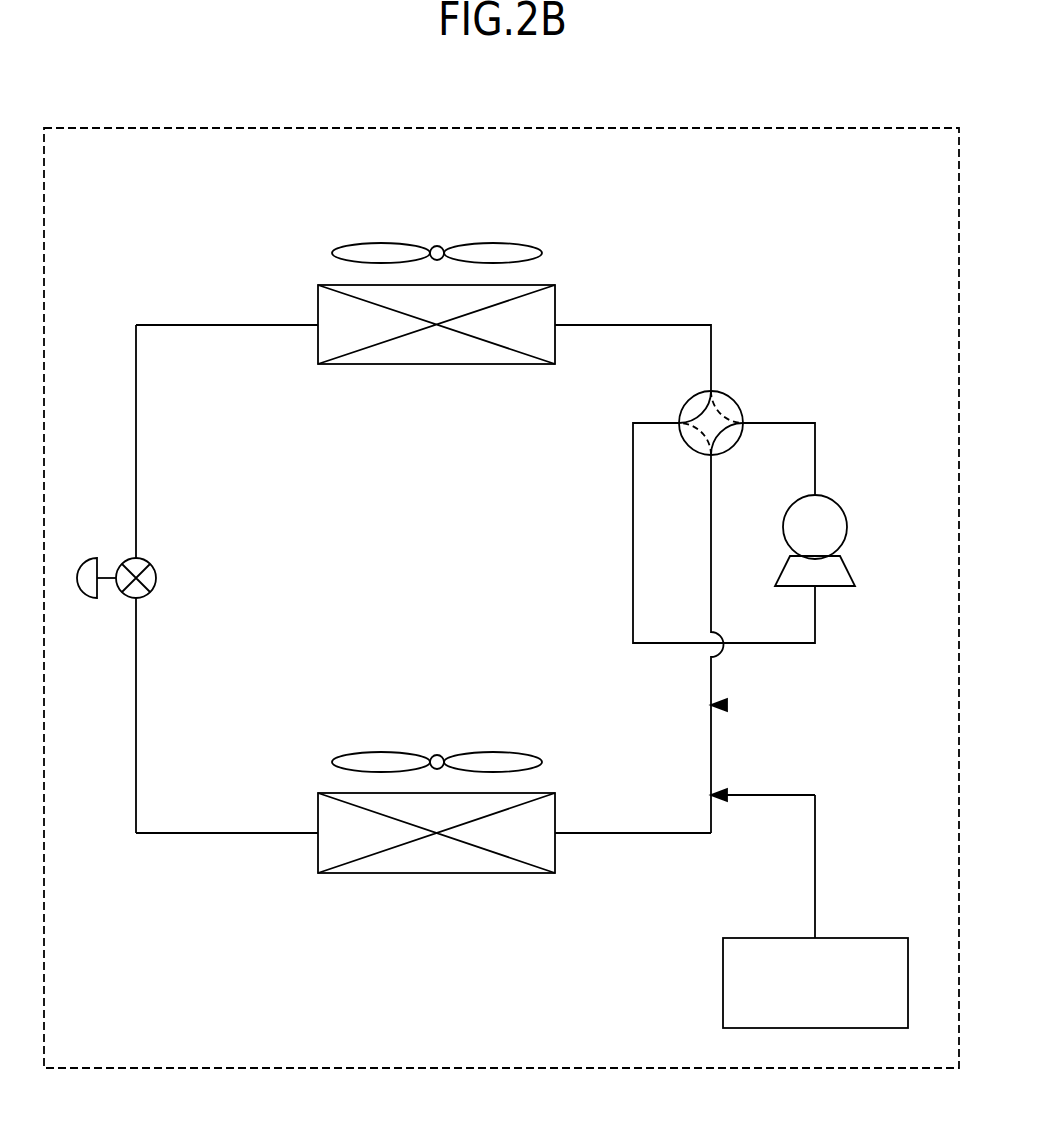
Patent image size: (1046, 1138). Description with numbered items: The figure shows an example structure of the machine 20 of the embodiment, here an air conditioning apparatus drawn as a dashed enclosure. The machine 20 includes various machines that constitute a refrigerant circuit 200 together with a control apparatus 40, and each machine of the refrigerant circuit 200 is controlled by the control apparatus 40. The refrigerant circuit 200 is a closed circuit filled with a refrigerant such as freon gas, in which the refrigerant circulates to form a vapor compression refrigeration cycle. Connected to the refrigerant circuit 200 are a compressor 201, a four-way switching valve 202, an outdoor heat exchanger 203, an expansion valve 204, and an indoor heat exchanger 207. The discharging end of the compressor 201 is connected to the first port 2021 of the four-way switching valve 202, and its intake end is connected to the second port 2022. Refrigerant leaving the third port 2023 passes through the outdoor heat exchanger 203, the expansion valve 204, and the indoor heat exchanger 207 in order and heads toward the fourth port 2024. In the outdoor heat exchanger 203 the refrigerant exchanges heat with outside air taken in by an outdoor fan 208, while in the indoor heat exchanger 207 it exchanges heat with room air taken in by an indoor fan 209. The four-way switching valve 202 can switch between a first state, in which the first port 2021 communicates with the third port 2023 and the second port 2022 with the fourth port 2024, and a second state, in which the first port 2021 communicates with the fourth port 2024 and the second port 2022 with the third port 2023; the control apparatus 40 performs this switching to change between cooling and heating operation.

The machine 20 is at (567, 128).
The refrigerant circuit 200 is at (726, 706).
The compressor 201 is at (847, 522).
The four-way switching valve 202 is at (693, 407).
The first port 2021 is at (740, 440).
The second port 2022 is at (682, 420).
The third port 2023 is at (720, 392).
The fourth port 2024 is at (707, 457).
The outdoor heat exchanger 203 is at (540, 285).
The expansion valve 204 is at (96, 557).
The indoor heat exchanger 207 is at (540, 793).
The outdoor fan 208 is at (383, 243).
The indoor fan 209 is at (383, 752).
The control apparatus 40 is at (855, 938).